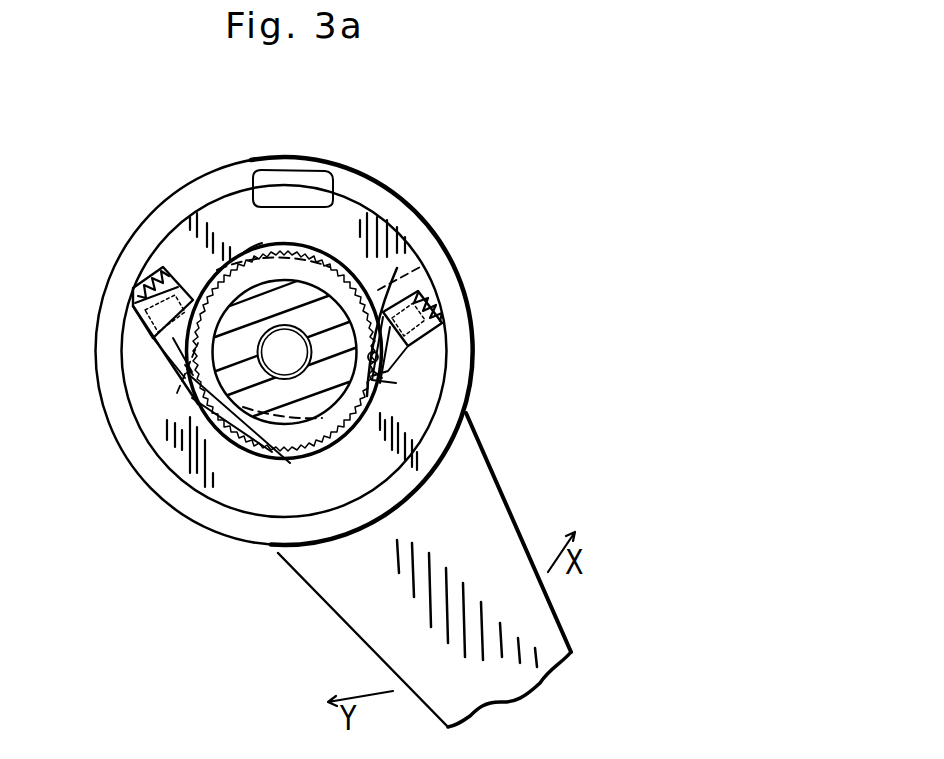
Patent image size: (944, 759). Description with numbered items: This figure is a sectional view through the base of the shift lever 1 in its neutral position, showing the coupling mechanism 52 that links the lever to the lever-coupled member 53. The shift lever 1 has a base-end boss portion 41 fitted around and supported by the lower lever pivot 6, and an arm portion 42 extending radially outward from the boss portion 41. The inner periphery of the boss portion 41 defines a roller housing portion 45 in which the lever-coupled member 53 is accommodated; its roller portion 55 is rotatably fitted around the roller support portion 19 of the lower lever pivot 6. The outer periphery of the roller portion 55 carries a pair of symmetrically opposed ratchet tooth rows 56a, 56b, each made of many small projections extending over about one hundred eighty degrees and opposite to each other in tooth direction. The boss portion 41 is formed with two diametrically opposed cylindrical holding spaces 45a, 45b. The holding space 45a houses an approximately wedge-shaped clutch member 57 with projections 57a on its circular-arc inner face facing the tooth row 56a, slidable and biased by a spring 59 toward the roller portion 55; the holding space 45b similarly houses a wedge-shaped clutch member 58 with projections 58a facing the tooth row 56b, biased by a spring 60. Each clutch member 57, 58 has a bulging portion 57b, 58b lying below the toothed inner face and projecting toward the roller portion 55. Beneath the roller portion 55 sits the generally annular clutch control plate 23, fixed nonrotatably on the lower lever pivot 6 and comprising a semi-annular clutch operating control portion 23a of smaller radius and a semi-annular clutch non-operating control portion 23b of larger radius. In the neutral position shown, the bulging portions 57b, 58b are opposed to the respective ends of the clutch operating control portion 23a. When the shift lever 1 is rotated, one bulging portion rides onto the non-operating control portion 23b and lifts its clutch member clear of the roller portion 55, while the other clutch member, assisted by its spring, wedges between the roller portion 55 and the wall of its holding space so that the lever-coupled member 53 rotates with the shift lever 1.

The shift lever 1 is at (417, 208).
The lower lever pivot 6 is at (335, 265).
The roller support portion 19 is at (320, 308).
The clutch control plate 23 is at (200, 270).
The clutch operating control portion 23a is at (303, 245).
The clutch non-operating control portion 23b is at (297, 460).
The boss portion 41 is at (172, 194).
The arm portion 42 is at (342, 616).
The roller housing portion 45 is at (256, 243).
The holding space 45a is at (388, 373).
The holding space 45b is at (180, 368).
The coupling mechanism 52 is at (222, 440).
The lever-coupled member 53 is at (205, 163).
The roller portion 55 is at (248, 245).
The ratchet tooth row 56a is at (418, 239).
The ratchet tooth row 56b is at (203, 422).
The clutch member 57 is at (468, 413).
The projections 57a is at (420, 335).
The bulging portion 57b is at (420, 267).
The clutch member 58 is at (173, 377).
The projections 58a is at (163, 344).
The bulging portion 58b is at (177, 393).
The spring 59 is at (441, 300).
The spring 60 is at (133, 297).